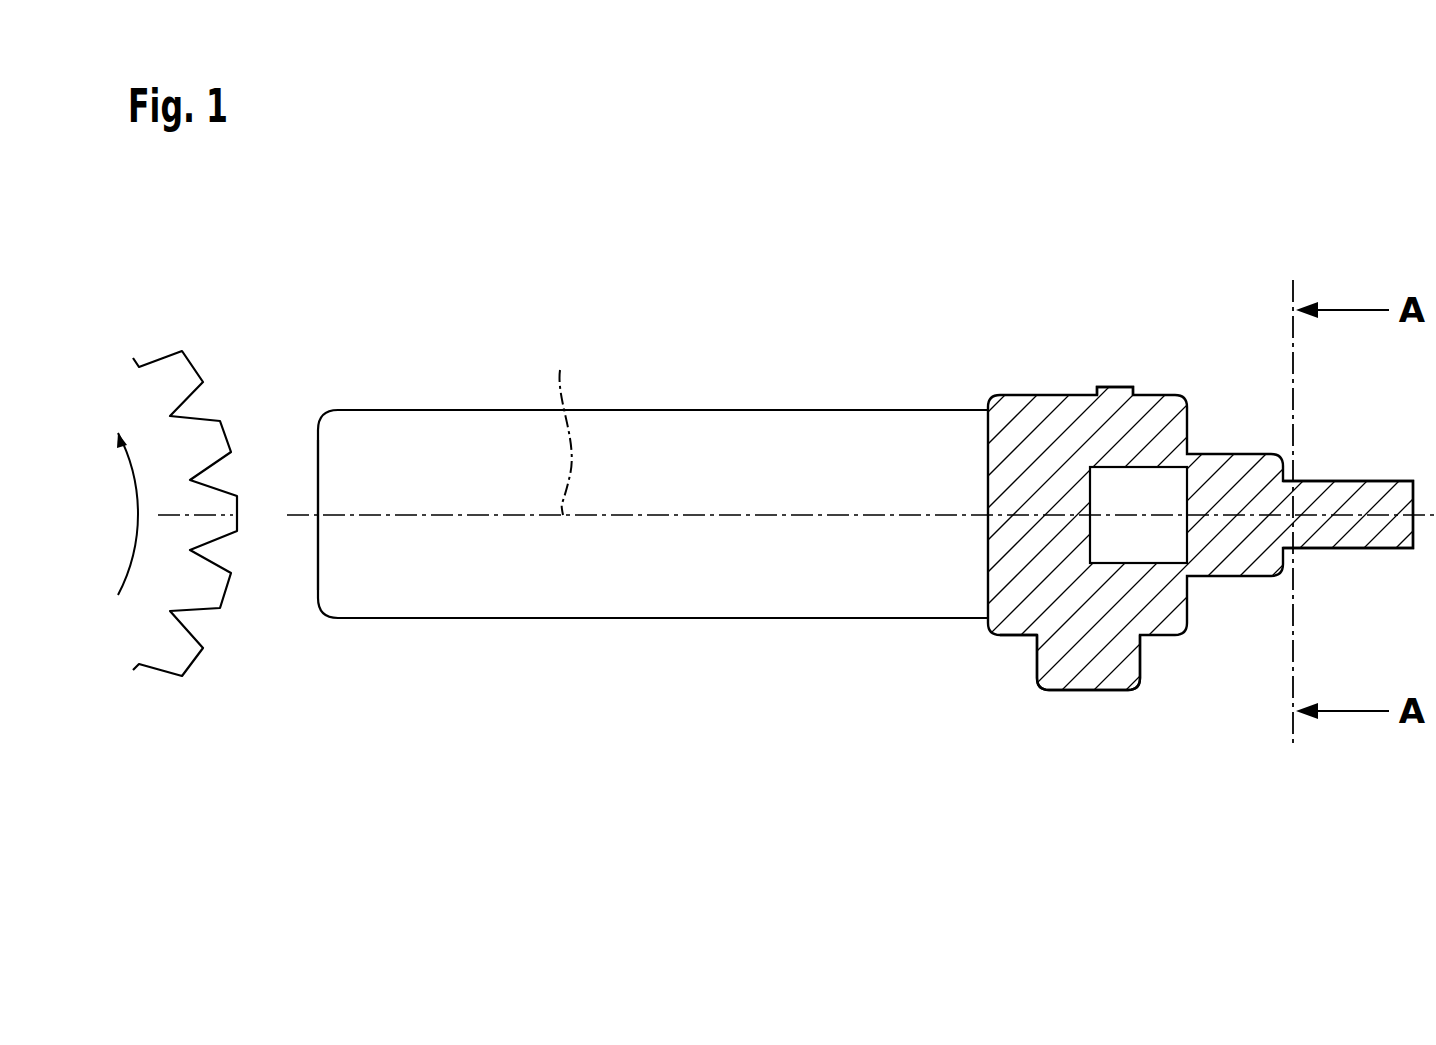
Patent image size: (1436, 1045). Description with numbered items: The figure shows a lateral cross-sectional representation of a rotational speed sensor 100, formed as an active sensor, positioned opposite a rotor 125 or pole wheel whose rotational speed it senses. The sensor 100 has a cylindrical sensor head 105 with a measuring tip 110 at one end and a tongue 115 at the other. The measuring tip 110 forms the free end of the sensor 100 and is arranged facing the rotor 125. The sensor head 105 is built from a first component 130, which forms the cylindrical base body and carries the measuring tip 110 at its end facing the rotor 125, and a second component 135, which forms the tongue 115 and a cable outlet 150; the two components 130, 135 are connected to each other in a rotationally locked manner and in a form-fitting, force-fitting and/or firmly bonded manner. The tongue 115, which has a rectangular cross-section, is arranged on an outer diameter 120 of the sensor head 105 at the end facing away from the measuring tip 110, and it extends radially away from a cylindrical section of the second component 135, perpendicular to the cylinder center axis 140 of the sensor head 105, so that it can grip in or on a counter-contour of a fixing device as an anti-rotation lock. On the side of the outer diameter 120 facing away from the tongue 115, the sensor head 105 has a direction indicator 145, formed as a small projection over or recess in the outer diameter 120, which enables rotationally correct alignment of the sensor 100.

The rotational speed sensor 100 is at (655, 280).
The sensor head 105 is at (845, 378).
The measuring tip 110 is at (303, 496).
The tongue 115 is at (1073, 716).
The outer diameter 120 is at (1020, 652).
The rotor 125 is at (170, 377).
The first component 130 is at (460, 430).
The second component 135 is at (1052, 403).
The cylinder center axis 140 is at (560, 425).
The direction indicator 145 is at (1113, 390).
The cable outlet 150 is at (1383, 490).